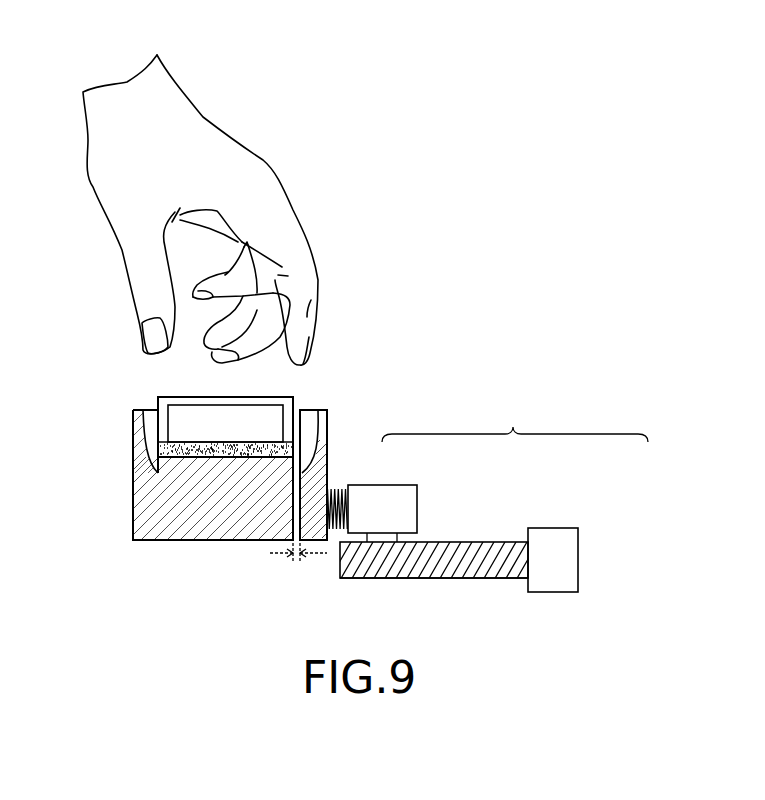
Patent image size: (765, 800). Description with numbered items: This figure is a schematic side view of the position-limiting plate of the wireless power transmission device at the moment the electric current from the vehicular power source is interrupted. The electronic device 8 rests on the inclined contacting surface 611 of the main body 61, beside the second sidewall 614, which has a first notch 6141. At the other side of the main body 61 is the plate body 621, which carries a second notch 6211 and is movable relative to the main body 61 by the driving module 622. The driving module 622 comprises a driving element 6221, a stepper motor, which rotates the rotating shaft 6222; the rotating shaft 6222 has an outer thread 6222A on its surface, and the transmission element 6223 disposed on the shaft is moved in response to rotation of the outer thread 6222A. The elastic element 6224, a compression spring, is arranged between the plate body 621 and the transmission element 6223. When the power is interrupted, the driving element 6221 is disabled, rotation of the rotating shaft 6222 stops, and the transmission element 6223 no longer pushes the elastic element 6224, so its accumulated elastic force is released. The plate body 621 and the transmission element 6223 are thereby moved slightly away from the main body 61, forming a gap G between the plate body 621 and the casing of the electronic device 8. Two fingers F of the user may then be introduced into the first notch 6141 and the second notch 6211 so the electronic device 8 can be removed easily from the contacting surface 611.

The fingers F is at (137, 290).
The electronic device 8 is at (216, 402).
The main body 61 is at (208, 473).
The contacting surface 611 is at (248, 458).
The second sidewall 614 is at (133, 422).
The first notch 6141 is at (153, 418).
The plate body 621 is at (311, 455).
The second notch 6211 is at (318, 408).
The driving module 622 is at (486, 517).
The driving element 6221 is at (555, 540).
The rotating shaft 6222 is at (445, 542).
The outer thread 6222A is at (477, 568).
The transmission element 6223 is at (408, 517).
The elastic element 6224 is at (338, 487).
The gap G is at (298, 567).